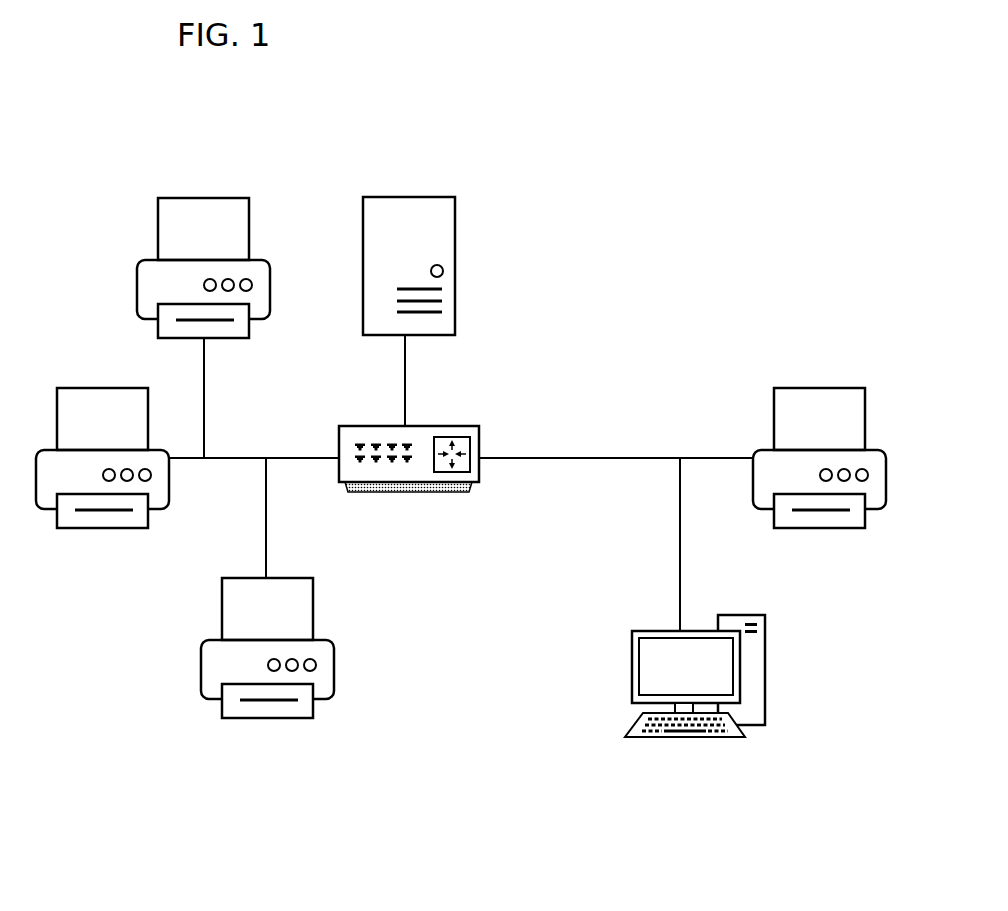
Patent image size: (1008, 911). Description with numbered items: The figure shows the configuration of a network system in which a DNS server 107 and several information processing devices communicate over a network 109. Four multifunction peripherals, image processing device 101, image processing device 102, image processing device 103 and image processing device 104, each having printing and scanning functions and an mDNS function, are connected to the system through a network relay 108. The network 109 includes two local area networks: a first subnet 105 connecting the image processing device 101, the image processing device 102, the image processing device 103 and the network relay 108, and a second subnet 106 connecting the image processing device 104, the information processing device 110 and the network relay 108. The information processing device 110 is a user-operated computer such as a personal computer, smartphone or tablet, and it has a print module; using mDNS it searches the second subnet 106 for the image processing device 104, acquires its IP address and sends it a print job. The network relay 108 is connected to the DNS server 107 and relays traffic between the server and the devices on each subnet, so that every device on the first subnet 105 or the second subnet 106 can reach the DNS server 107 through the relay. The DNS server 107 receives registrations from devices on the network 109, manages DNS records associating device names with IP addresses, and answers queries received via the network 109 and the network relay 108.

The image processing device 101 is at (103, 527).
The image processing device 102 is at (268, 717).
The image processing device 103 is at (203, 198).
The image processing device 104 is at (822, 527).
The first subnet 105 is at (288, 452).
The second subnet 106 is at (598, 452).
The DNS server 107 is at (408, 197).
The network relay 108 is at (410, 492).
The network 109 is at (441, 391).
The information processing device 110 is at (651, 754).